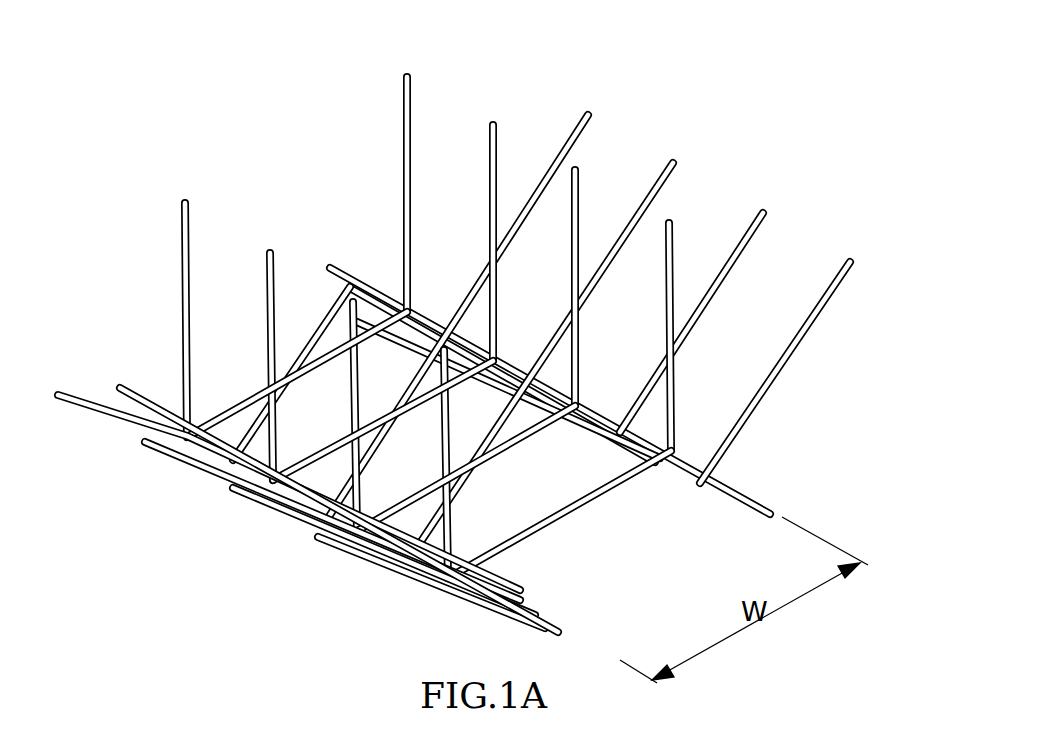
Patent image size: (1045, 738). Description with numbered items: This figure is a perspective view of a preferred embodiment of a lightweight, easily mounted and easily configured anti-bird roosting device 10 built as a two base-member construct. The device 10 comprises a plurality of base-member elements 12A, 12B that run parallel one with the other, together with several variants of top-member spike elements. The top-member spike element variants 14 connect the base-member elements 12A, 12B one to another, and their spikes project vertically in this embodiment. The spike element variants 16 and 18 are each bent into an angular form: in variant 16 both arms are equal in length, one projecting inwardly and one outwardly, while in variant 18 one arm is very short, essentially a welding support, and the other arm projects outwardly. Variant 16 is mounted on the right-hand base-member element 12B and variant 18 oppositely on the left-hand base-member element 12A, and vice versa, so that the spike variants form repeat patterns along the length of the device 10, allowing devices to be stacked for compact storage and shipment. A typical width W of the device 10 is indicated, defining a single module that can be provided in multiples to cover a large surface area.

The anti-bird roosting device 10 is at (674, 116).
The left-hand base-member element 12A is at (540, 604).
The right-hand base-member element 12B is at (753, 494).
The top-member spike element variant 14 is at (670, 237).
The spike element variant 16 is at (847, 278).
The spike element variant 18 is at (363, 557).